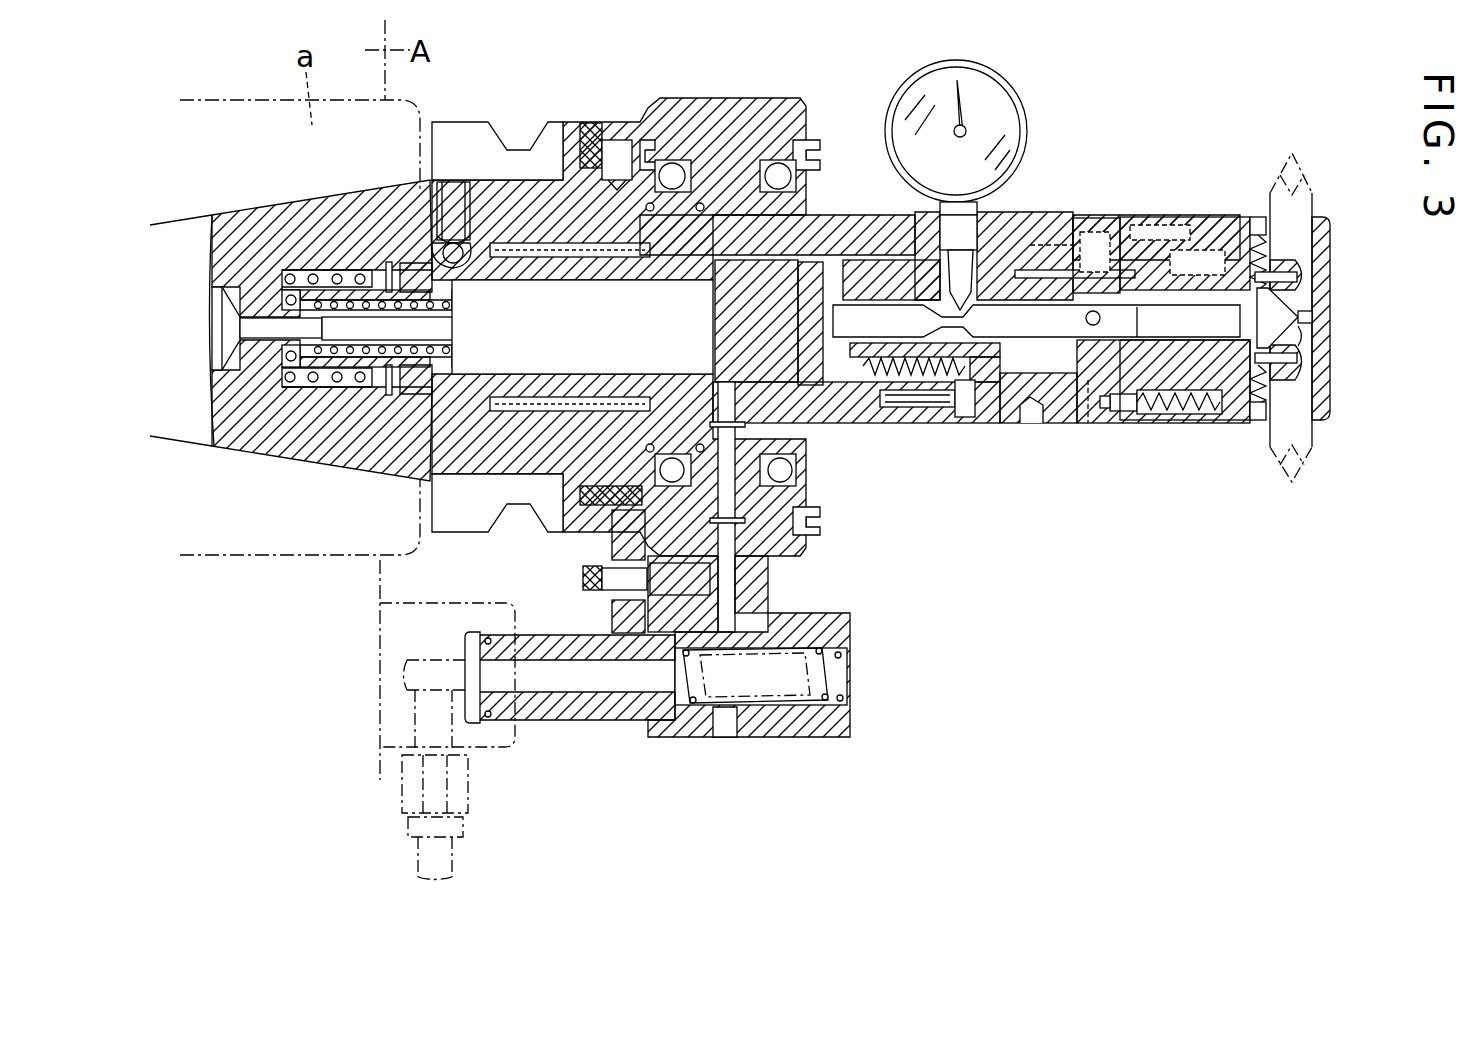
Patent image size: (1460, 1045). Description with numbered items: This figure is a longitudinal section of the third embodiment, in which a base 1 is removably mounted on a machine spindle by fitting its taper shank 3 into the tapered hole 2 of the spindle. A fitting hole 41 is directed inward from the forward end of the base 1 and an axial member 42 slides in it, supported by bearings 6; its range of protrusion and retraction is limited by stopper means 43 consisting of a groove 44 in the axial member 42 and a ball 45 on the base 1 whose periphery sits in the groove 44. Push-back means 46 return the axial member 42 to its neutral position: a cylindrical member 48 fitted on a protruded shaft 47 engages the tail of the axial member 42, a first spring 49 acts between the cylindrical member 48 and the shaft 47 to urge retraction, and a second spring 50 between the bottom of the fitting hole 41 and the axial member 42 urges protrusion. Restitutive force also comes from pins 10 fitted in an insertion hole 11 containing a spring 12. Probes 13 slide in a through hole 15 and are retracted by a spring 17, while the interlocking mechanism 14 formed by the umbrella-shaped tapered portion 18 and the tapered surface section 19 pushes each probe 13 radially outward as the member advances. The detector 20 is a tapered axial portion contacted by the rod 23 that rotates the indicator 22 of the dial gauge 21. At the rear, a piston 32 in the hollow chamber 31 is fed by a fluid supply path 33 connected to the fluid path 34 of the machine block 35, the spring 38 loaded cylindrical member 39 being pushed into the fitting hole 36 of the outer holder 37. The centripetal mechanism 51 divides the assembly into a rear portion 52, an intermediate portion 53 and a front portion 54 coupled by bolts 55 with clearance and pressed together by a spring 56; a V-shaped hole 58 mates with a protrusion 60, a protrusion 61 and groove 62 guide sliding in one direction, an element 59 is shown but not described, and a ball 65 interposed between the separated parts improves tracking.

The base 1 is at (574, 114).
The tapered hole 2 is at (296, 207).
The taper shank 3 is at (190, 237).
The bearings 6 is at (1200, 297).
The pins 10 is at (840, 372).
The insertion hole 11 is at (938, 357).
The spring 12 is at (897, 380).
The probes 13 is at (1295, 205).
The interlocking mechanism 14 is at (1297, 302).
The through hole 15 is at (1312, 233).
The spring 17 is at (1297, 387).
The umbrella-shaped tapered portion 18 is at (1312, 313).
The tapered surface section 19 is at (1302, 330).
The detector 20 is at (967, 317).
The dial gauge 21 is at (895, 95).
The indicator 22 is at (965, 128).
The rod 23 is at (998, 257).
The hollow chamber 31 is at (760, 262).
The piston 32 is at (820, 275).
The fluid supply path 33 is at (720, 553).
The fluid path 34 is at (425, 675).
The block 35 is at (393, 722).
The fitting hole 36 is at (452, 643).
The outer holder 37 is at (775, 617).
The spring 38 is at (805, 673).
The cylindrical member 39 is at (540, 710).
The fitting hole 41 is at (470, 397).
The axial member 42 is at (877, 205).
The stopper means 43 is at (476, 238).
The groove 44 is at (403, 250).
The ball 45 is at (455, 245).
The push-back means 46 is at (304, 388).
The protruded shaft 47 is at (463, 325).
The cylindrical member 48 is at (365, 407).
The first spring 49 is at (380, 302).
The second spring 50 is at (288, 274).
The centripetal mechanism 51 is at (1104, 436).
The rear portion 52 is at (1050, 233).
The intermediate portion 53 is at (1103, 230).
The front portion 54 is at (1138, 225).
The bolts 55 is at (1210, 243).
The spring 56 is at (1180, 240).
The V-shaped hole 58 is at (1123, 410).
The spring 59 is at (1190, 400).
The protrusion 60 is at (1128, 403).
The protrusion 61 is at (1077, 287).
The groove 62 is at (1080, 355).
The ball 65 is at (1087, 325).